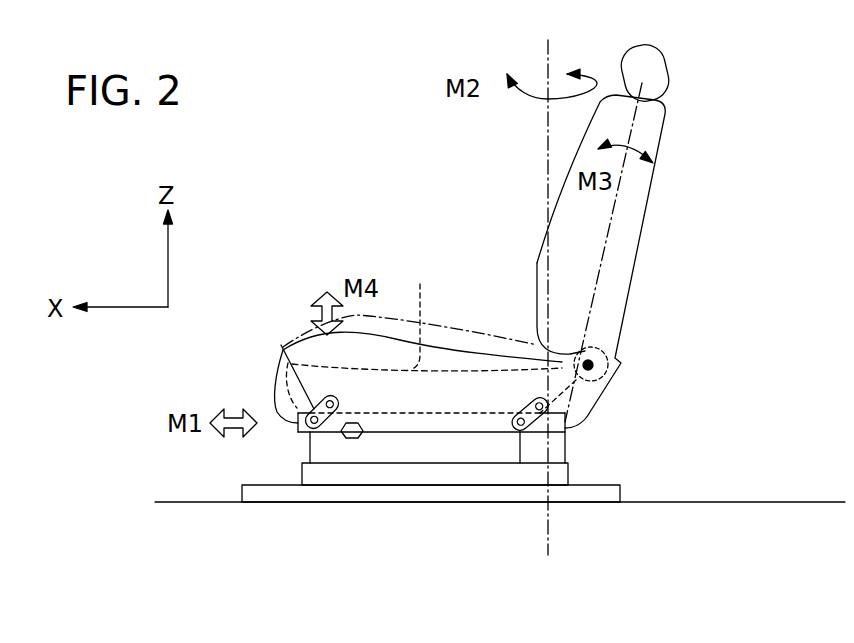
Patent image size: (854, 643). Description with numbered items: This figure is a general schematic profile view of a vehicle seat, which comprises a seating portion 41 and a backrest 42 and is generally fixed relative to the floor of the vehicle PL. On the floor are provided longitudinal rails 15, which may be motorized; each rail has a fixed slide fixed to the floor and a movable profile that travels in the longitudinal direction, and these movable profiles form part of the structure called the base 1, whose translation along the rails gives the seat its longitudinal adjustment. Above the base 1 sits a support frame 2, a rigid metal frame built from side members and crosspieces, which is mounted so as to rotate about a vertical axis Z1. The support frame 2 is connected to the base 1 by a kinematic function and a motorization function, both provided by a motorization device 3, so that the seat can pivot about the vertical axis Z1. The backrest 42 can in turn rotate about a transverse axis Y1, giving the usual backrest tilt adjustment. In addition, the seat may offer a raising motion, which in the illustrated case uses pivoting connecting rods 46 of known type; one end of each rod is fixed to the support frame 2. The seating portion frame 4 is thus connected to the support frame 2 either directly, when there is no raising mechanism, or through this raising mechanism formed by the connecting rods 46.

The base 1 is at (453, 478).
The support frame 2 is at (403, 423).
The motorization device 3 is at (349, 438).
The seating portion frame 4 is at (415, 313).
The longitudinal rails 15 is at (583, 503).
The seating portion 41 is at (272, 389).
The backrest 42 is at (656, 228).
The pivoting connecting rods 46 is at (298, 398).
The floor of the vehicle PL is at (699, 501).
The vertical axis Z1 is at (552, 67).
The transverse axis Y1 is at (589, 352).